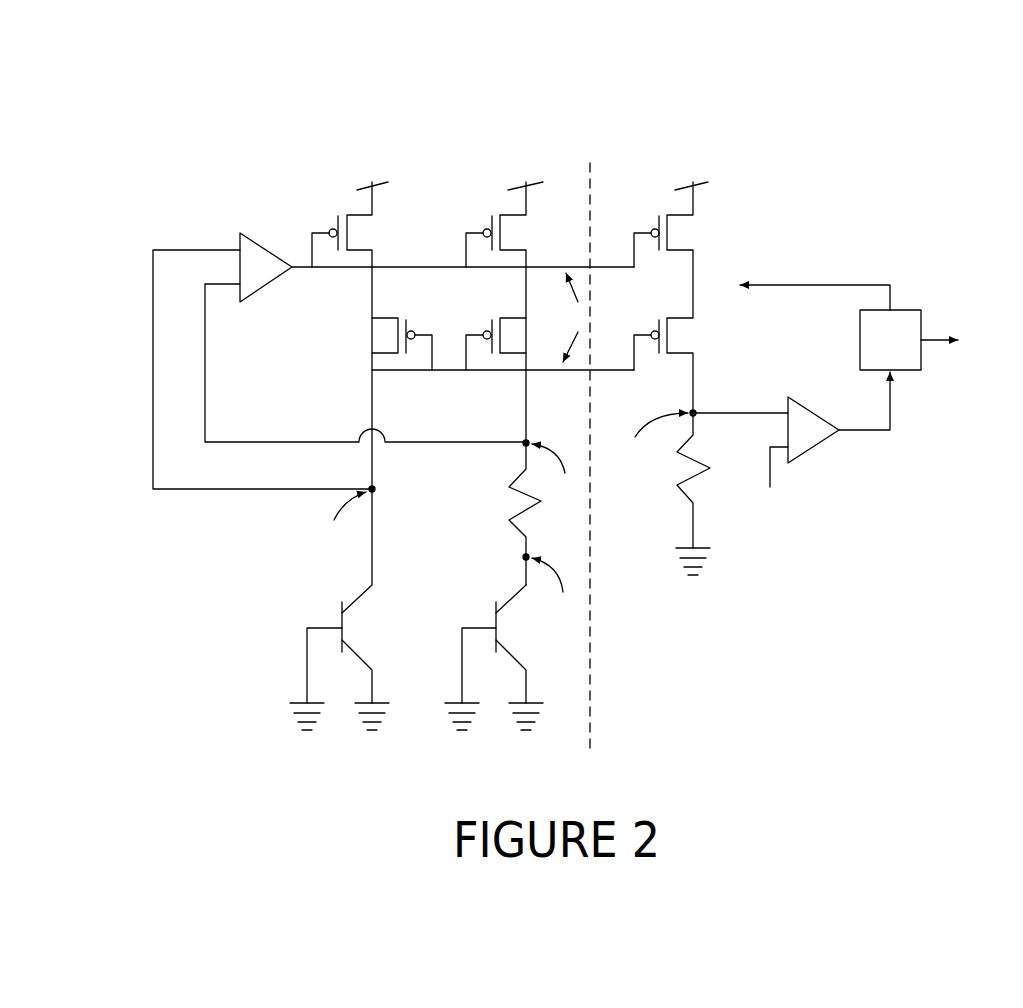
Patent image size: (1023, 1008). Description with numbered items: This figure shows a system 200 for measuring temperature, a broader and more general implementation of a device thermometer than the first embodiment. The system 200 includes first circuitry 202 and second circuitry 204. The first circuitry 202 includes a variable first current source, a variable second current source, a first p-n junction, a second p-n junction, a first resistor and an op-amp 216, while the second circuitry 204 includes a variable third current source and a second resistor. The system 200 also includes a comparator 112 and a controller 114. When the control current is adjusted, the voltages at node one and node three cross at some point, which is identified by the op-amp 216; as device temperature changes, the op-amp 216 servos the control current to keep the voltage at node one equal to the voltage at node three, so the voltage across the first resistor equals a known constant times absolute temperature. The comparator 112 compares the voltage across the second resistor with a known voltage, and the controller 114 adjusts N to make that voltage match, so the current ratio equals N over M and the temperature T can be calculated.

The system 200 is at (121, 85).
The first circuitry 202 is at (471, 157).
The second circuitry 204 is at (748, 158).
The op-amp 216 is at (263, 238).
The comparator 112 is at (818, 450).
The controller 114 is at (905, 351).